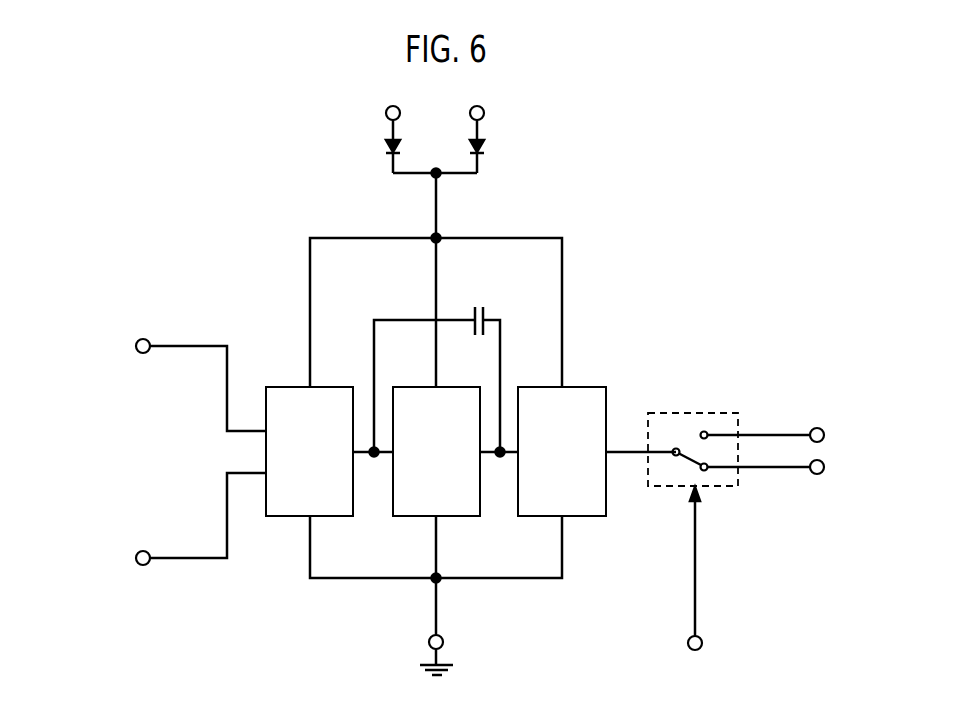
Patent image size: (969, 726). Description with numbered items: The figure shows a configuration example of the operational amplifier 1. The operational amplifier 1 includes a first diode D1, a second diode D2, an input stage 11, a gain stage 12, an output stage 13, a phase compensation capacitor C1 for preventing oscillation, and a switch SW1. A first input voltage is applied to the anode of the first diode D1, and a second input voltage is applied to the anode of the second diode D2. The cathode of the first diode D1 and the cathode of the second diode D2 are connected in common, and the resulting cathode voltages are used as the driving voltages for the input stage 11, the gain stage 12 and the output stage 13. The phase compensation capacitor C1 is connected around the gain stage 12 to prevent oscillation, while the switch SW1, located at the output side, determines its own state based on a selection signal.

The operational amplifier 1 is at (682, 131).
The input stage 11 is at (342, 386).
The gain stage 12 is at (467, 386).
The output stage 13 is at (594, 386).
The phase compensation capacitor C1 is at (480, 300).
The first diode D1 is at (383, 148).
The second diode D2 is at (490, 148).
The switch SW1 is at (693, 412).